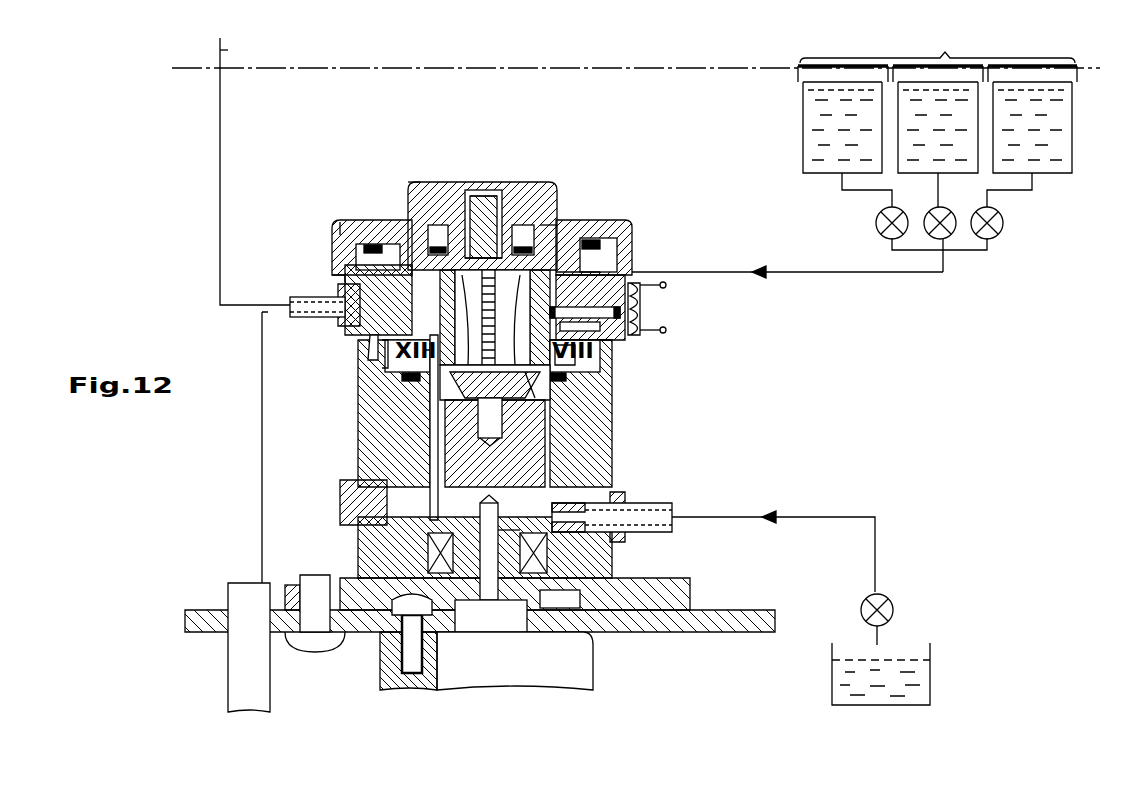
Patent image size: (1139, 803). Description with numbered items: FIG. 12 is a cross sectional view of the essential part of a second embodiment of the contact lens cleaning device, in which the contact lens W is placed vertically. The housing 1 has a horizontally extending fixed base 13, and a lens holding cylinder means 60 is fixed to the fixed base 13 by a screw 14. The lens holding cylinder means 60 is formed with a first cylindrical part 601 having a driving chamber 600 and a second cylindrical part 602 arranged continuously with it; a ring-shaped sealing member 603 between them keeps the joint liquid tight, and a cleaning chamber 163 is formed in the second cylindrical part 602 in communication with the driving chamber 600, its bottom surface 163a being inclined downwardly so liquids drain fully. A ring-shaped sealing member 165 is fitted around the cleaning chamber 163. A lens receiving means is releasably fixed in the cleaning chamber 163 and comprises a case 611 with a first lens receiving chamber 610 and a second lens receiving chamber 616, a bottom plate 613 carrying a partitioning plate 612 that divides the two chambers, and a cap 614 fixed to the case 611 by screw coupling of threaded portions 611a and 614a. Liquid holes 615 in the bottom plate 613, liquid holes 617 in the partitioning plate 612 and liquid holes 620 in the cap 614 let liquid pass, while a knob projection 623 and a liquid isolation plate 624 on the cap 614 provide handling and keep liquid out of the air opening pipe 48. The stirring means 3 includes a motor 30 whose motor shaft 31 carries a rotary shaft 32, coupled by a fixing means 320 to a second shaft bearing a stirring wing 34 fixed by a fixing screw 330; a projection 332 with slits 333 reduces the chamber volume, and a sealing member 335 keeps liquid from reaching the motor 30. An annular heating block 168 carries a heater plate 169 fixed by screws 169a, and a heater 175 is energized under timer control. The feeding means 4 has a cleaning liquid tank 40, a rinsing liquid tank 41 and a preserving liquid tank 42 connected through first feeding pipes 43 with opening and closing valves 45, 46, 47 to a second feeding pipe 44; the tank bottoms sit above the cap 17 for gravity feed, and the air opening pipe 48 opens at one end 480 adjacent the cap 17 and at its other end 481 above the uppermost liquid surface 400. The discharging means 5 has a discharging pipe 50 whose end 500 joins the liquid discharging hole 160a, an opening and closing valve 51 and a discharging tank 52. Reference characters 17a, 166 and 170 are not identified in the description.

The uppermost liquid surface 400 is at (546, 68).
The air opening pipe 48 is at (220, 137).
The other end of air opening pipe 481 is at (222, 52).
The lens holding cylinder means 60 is at (245, 456).
The liquid holes 620 is at (461, 198).
The liquid holes 617 is at (500, 300).
The first lens receiving chamber 610 is at (450, 240).
The knob projection 623 is at (490, 262).
The liquid isolation plate 624 is at (436, 228).
The piston head 17a is at (478, 196).
The cap 17 is at (500, 235).
The cap 614 is at (538, 240).
The second lens receiving chamber 616 is at (562, 272).
The threaded portion 611a is at (600, 243).
The partitioning plate 612 is at (398, 244).
The contact lens W is at (428, 225).
The ring-shaped sealing member 165 is at (360, 244).
The flange 170 is at (345, 265).
The side block 166 is at (352, 285).
The one end of air opening pipe 480 is at (300, 298).
The threaded portion 614a is at (612, 275).
The heating block 168 is at (632, 282).
The second feeding pipe 44 is at (790, 272).
The heater 175 is at (650, 322).
The screws 169a is at (650, 290).
The heater plate 169 is at (648, 334).
The driving chamber 600 is at (595, 430).
The first cylindrical part 601 is at (612, 390).
The case 611 is at (372, 345).
The second cylindrical part 602 is at (385, 365).
The ring-shaped sealing member 603 is at (405, 377).
The liquid holes 615 is at (428, 380).
The projection 332 is at (545, 390).
The slits 333 is at (550, 395).
The fixing screw 330 is at (450, 420).
The stirring wing 34 is at (470, 405).
The bottom surface 163a is at (598, 345).
The cleaning chamber 163 is at (572, 370).
The bottom plate 613 is at (600, 440).
The fixing means 320 is at (430, 520).
The liquid discharging hole 160a is at (612, 542).
The one end of discharging pipe 500 is at (672, 522).
The discharging pipe 50 is at (762, 517).
The discharging means 5 is at (770, 528).
The opening and closing valve 51 is at (888, 598).
The discharging tank 52 is at (930, 645).
The rotary shaft 32 is at (472, 596).
The sealing member 335 is at (455, 600).
The motor shaft 31 is at (490, 598).
The motor 30 is at (585, 668).
The housing 1 is at (212, 636).
The fixed base 13 is at (228, 612).
The screw 14 is at (312, 650).
The stirring means 3 is at (393, 685).
The feeding means 4 is at (937, 46).
The cleaning liquid tank 40 is at (803, 112).
The rinsing liquid tank 41 is at (978, 160).
The preserving liquid tank 42 is at (1072, 162).
The first feeding pipes 43 is at (1054, 196).
The opening and closing valve 45 is at (878, 230).
The opening and closing valve 46 is at (945, 238).
The opening and closing valve 47 is at (998, 232).